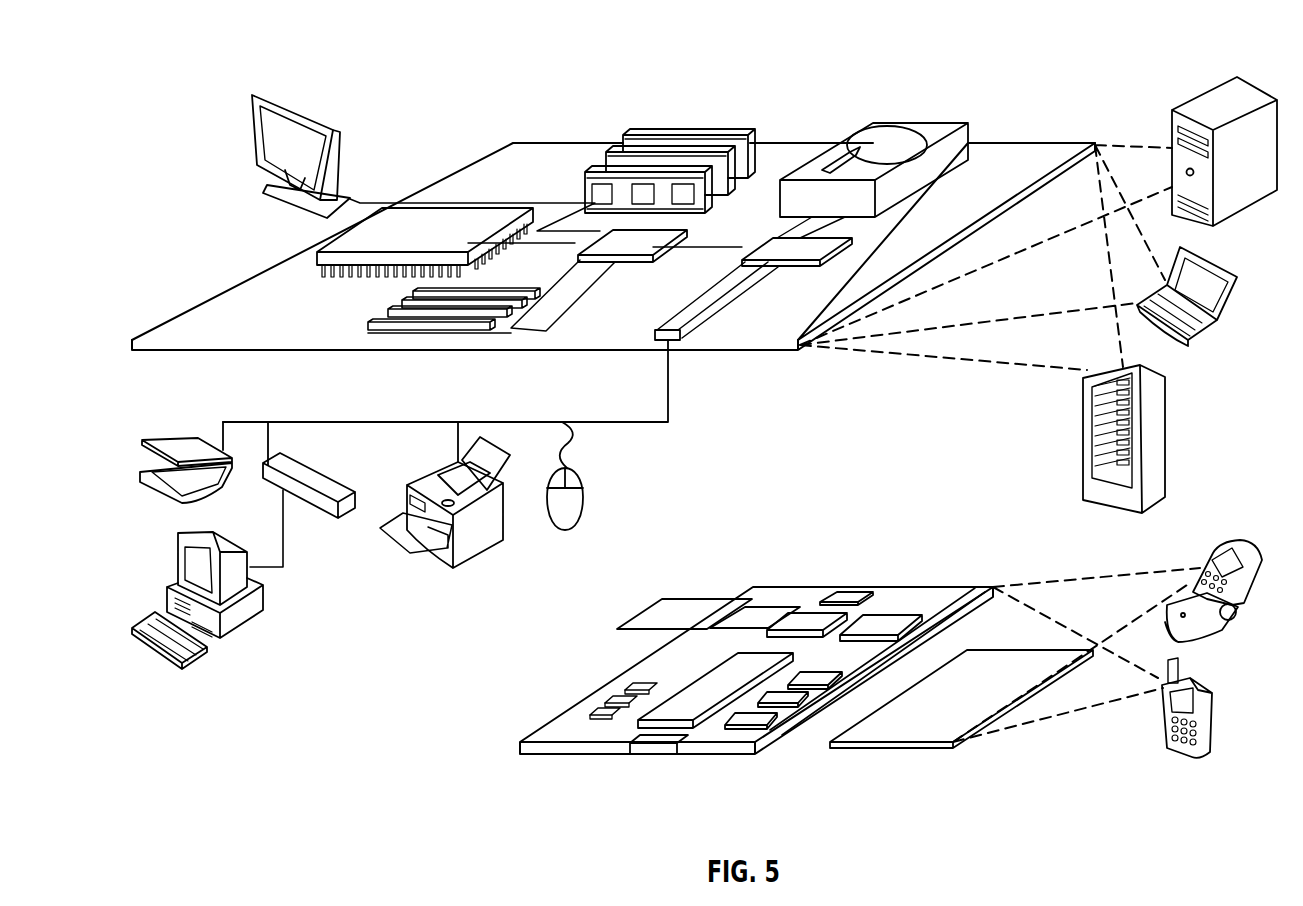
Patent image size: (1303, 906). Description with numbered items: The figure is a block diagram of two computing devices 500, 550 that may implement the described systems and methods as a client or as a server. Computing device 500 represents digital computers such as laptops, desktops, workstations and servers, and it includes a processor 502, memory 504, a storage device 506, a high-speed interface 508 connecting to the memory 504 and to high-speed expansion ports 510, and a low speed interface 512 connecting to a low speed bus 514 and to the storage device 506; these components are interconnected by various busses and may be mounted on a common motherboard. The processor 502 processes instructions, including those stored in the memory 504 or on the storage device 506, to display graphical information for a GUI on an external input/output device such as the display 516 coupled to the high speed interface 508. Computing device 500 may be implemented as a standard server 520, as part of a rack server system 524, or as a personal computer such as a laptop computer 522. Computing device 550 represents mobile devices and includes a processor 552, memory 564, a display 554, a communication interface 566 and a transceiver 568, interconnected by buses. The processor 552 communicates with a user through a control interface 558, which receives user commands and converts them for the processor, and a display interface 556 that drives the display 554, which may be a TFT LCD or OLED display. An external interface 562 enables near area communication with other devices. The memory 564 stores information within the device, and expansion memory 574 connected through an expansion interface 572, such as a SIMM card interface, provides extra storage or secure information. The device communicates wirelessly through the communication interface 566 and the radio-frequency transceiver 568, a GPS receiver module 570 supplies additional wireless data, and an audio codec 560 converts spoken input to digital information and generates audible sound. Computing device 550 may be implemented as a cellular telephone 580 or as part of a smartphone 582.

The computing device 500 is at (446, 118).
The processor 502 is at (320, 259).
The memory 504 is at (640, 150).
The storage device 506 is at (870, 128).
The high-speed interface 508 is at (610, 242).
The high-speed expansion ports 510 is at (393, 317).
The low speed interface 512 is at (780, 243).
The low speed bus 514 is at (680, 341).
The display 516 is at (258, 94).
The standard server 520 is at (1172, 129).
The laptop computer 522 is at (1240, 270).
The rack server system 524 is at (1083, 460).
The computing device 550 is at (497, 752).
The processor 552 is at (690, 712).
The display 554 is at (920, 730).
The display interface 556 is at (758, 723).
The control interface 558 is at (798, 693).
The audio codec 560 is at (812, 680).
The external interface 562 is at (655, 748).
The memory 564 is at (608, 704).
The communication interface 566 is at (807, 622).
The transceiver 568 is at (880, 622).
The GPS receiver module 570 is at (855, 592).
The expansion interface 572 is at (733, 601).
The expansion memory 574 is at (660, 600).
The cellular telephone 580 is at (1222, 560).
The smartphone 582 is at (1162, 714).